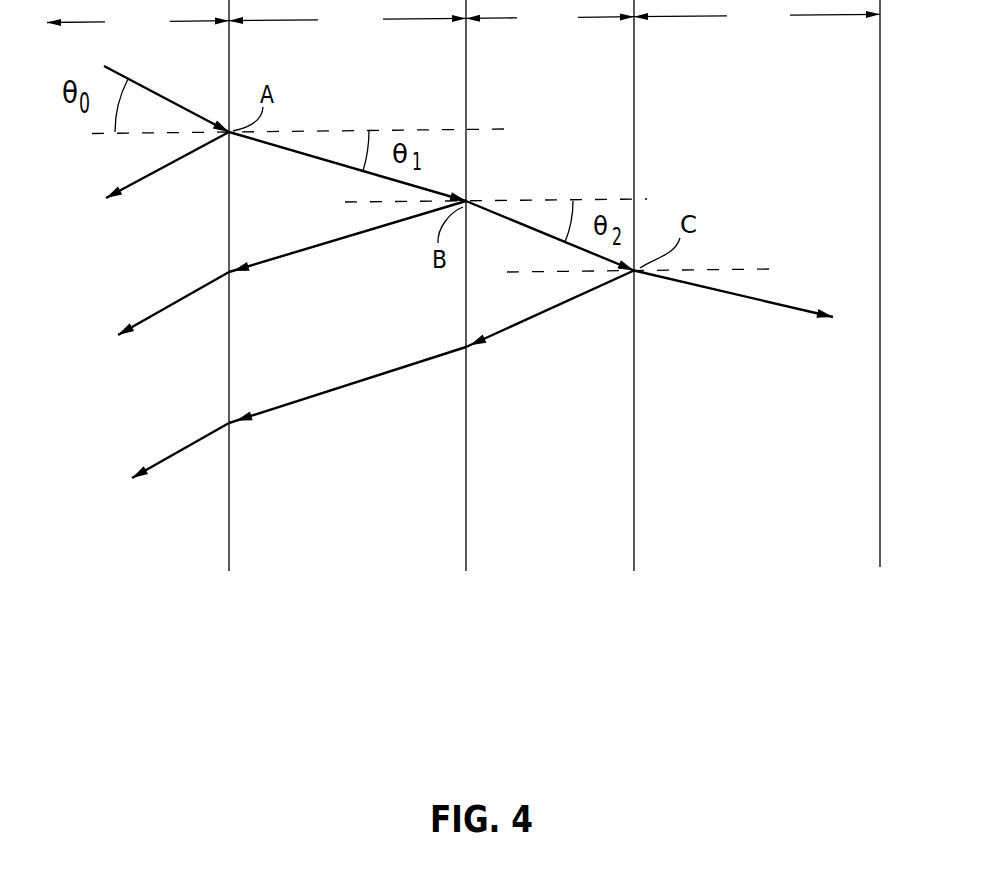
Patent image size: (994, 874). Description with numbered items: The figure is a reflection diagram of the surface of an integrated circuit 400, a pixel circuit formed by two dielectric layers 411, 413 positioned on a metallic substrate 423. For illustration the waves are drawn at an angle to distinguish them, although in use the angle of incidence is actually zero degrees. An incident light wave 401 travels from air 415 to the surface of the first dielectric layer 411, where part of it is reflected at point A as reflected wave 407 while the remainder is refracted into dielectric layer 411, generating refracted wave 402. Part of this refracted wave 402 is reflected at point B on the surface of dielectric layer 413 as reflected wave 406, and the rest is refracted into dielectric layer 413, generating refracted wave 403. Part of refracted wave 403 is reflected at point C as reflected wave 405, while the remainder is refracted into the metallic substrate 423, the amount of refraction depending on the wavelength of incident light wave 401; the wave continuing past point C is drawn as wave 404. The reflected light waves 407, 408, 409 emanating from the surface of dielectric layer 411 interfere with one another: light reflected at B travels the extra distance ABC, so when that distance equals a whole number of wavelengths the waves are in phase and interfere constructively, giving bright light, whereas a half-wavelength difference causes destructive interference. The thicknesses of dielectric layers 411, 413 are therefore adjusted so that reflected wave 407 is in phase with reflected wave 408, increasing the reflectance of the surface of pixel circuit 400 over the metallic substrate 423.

The integrated circuit 400 is at (569, 620).
The incident light wave 401 is at (167, 99).
The refracted wave 402 is at (253, 140).
The refracted wave 403 is at (497, 215).
The transmitted output ray 404 is at (710, 290).
The reflected wave 405 is at (512, 328).
The reflected wave 406 is at (295, 253).
The reflected wave 407 is at (166, 167).
The reflected wave 408 is at (180, 301).
The reflected wave 409 is at (188, 448).
The dielectric layer 411 is at (347, 20).
The dielectric layer 413 is at (550, 17).
The air 415 is at (138, 24).
The metallic substrate 423 is at (757, 16).